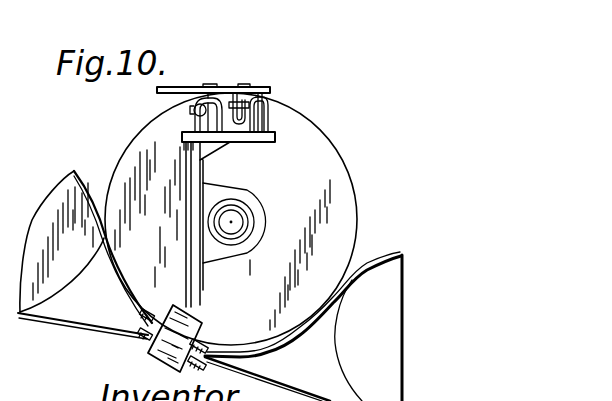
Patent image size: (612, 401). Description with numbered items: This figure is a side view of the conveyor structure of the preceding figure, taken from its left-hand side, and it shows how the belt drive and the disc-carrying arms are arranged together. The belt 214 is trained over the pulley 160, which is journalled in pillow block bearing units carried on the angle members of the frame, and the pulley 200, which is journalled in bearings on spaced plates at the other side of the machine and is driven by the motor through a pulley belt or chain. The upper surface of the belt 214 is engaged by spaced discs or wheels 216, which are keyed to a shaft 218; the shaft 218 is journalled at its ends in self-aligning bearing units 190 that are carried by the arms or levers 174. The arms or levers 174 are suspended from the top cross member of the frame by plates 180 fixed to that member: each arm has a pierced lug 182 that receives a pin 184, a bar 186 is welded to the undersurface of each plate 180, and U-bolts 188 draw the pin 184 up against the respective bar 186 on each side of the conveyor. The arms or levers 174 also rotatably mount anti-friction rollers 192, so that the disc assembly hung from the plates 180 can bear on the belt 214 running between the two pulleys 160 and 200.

The pulley 160 is at (375, 282).
The arms or levers 174 is at (195, 165).
The plates 180 is at (265, 87).
The pierced lugs 182 is at (202, 123).
The pins 184 is at (193, 100).
The bar 186 is at (264, 118).
The U-bolts 188 is at (240, 100).
The self-aligning bearing unit 190 is at (265, 218).
The anti-friction rollers 192 is at (140, 333).
The pulley 200 is at (65, 200).
The belt 214 is at (270, 381).
The discs or wheels 216 is at (297, 149).
The shaft 218 is at (232, 222).